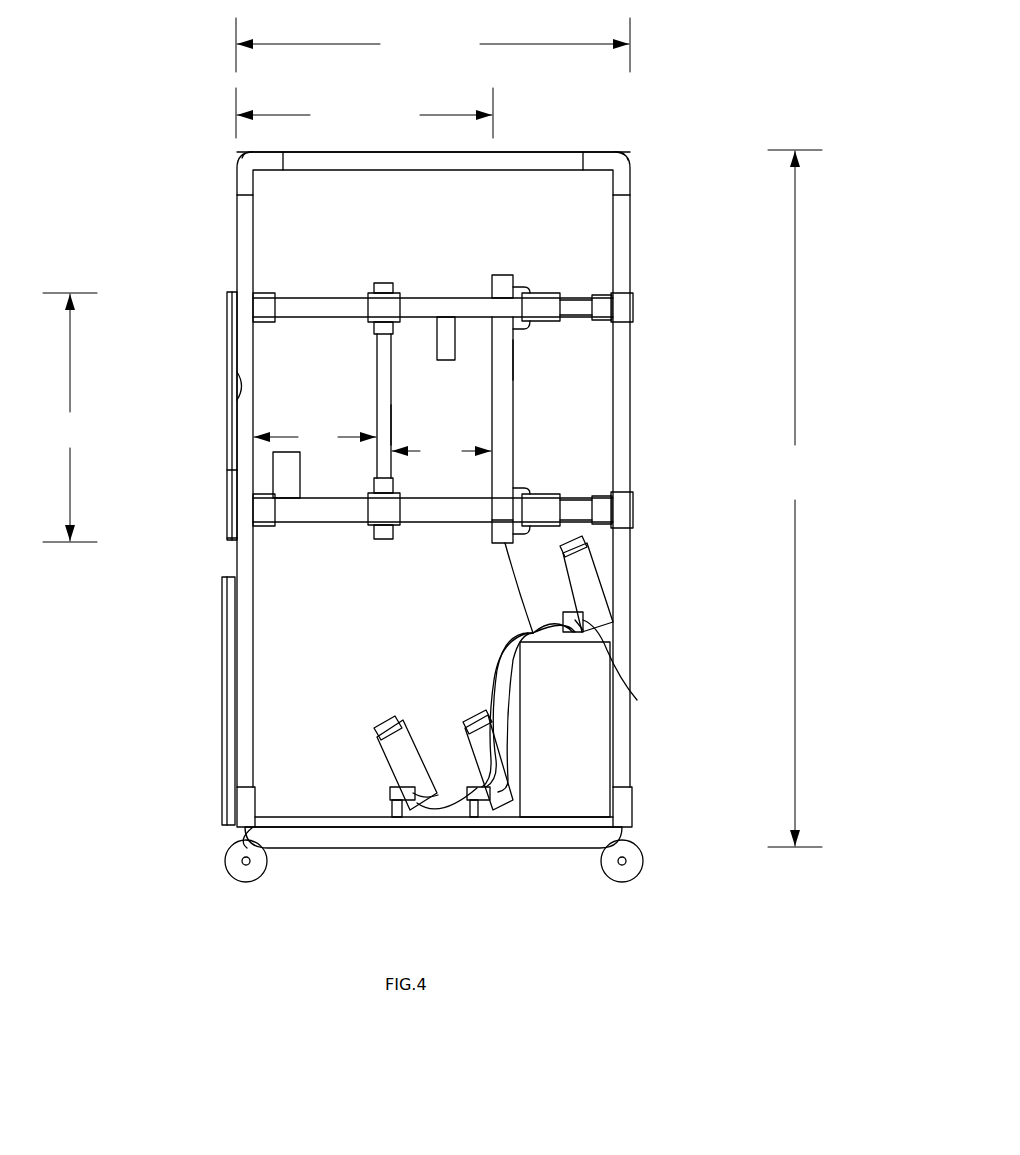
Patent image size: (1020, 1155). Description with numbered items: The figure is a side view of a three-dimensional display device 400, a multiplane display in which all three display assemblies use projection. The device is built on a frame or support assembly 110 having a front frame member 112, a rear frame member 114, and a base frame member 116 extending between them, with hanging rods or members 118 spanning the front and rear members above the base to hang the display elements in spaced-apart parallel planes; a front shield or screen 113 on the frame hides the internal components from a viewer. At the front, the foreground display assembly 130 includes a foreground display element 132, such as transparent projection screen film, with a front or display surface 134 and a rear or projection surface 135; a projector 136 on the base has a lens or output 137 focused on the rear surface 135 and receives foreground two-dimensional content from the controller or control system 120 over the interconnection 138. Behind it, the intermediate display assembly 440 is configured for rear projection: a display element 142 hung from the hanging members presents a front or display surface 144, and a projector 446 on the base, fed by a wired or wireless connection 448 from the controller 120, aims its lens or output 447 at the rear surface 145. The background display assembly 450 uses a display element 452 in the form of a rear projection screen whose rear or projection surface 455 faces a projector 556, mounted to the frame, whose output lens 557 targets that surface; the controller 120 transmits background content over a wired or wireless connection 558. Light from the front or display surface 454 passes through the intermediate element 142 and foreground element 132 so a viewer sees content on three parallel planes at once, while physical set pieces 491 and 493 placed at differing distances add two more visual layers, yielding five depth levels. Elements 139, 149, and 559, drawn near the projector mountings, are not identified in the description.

The 3D display device 400 is at (692, 104).
The frame or support assembly 110 is at (527, 148).
The front frame member 112 is at (237, 235).
The front shield or screen 113 is at (222, 781).
The rear frame member 114 is at (630, 237).
The base frame member 116 is at (566, 833).
The hanging rods or members 118 is at (575, 498).
The controller or control system 120 is at (610, 668).
The foreground display assembly 130 is at (223, 275).
The foreground display element 132 is at (225, 550).
The front or display surface 134 is at (236, 475).
The rear or projection surface 135 is at (238, 380).
The projector 136 is at (407, 740).
The lens or output 137 is at (390, 718).
The interconnection 138 is at (440, 798).
The first camera mount 139 is at (390, 795).
The display element 142 is at (382, 280).
The front or display surface 144 is at (377, 410).
The rear surface 145 is at (391, 425).
The second camera mount 149 is at (473, 822).
The intermediate display assembly 440 is at (428, 246).
The projector 446 is at (515, 762).
The lens or output 447 is at (470, 725).
The wired or wireless connection 448 is at (507, 712).
The background display assembly 450 is at (548, 246).
The display element 452 is at (503, 270).
The front or display surface 454 is at (492, 438).
The rear or projection surface 455 is at (513, 355).
The physical set piece 491 is at (300, 482).
The physical set piece 493 is at (437, 338).
The projector 556 is at (605, 585).
The output lens 557 is at (592, 540).
The wired or wireless connection 558 is at (598, 673).
The third camera mount 559 is at (590, 628).